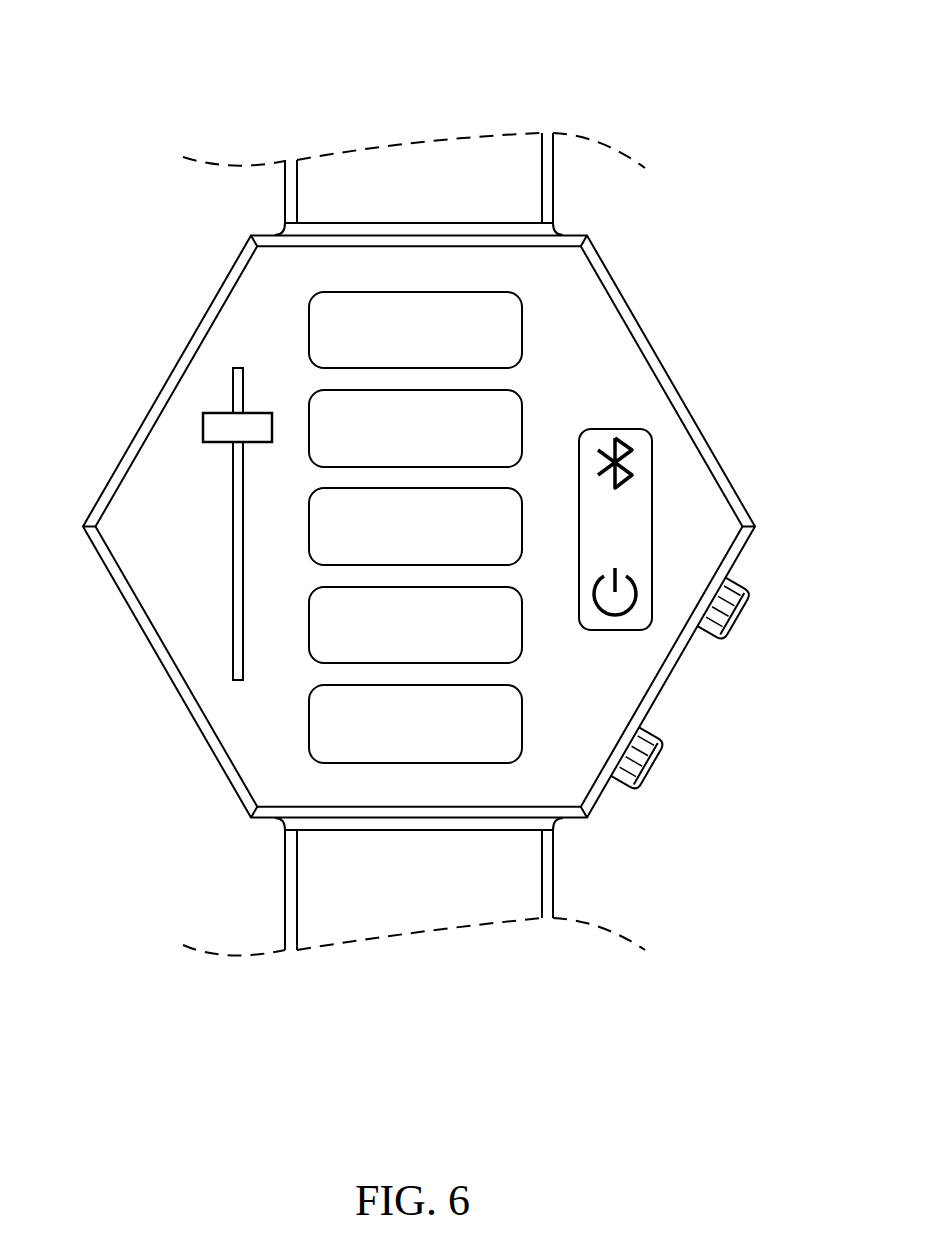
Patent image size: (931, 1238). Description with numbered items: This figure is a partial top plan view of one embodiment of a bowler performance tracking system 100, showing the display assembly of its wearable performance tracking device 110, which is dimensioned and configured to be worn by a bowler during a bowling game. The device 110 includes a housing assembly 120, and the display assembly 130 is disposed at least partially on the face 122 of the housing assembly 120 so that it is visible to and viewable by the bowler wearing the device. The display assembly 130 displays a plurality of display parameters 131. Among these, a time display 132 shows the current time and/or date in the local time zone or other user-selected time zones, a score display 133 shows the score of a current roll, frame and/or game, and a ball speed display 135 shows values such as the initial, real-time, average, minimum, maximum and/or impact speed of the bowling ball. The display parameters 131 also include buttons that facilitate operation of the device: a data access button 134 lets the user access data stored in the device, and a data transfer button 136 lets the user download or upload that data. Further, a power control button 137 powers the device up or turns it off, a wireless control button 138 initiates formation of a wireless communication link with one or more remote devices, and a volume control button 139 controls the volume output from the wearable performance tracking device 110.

The bowler performance tracking system 100 is at (706, 86).
The wearable performance tracking device 110 is at (628, 876).
The housing assembly 120 is at (710, 352).
The face 122 is at (250, 293).
The display assembly 130 is at (158, 720).
The display parameters 131 is at (522, 343).
The time display 132 is at (506, 338).
The score display 133 is at (505, 452).
The data access button 134 is at (505, 553).
The ball speed display 135 is at (505, 638).
The data transfer button 136 is at (510, 740).
The power control button 137 is at (640, 583).
The wireless control button 138 is at (632, 458).
The volume control button 139 is at (233, 470).